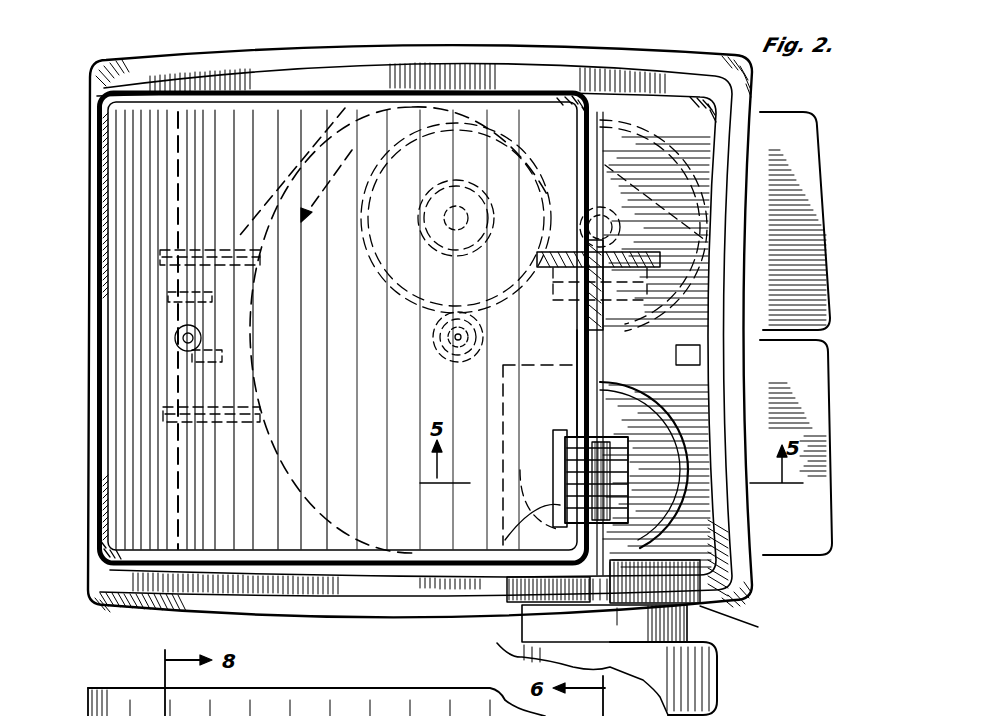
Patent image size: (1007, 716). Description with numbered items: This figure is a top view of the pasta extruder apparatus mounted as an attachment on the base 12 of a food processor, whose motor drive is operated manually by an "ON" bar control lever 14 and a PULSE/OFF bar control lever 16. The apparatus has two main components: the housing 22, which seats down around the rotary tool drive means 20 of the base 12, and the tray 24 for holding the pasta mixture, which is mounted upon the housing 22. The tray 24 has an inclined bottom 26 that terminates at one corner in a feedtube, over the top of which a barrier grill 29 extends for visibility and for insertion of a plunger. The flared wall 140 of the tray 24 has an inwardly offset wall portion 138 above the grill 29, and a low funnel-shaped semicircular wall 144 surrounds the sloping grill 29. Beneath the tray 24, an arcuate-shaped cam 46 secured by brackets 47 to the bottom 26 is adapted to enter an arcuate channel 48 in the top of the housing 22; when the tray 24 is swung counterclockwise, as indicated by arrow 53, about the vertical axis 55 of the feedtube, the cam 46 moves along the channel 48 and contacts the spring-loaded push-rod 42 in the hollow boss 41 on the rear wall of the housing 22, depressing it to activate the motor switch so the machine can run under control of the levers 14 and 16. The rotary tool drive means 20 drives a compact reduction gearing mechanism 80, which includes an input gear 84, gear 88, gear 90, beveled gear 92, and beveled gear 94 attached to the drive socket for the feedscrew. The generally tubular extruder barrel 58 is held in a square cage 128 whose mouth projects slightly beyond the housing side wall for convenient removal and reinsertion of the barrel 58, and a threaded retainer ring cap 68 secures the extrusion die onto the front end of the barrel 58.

The base 12 is at (714, 54).
The "ON" bar control lever 14 is at (812, 402).
The PULSE/OFF bar control lever 16 is at (812, 188).
The rotary tool drive means 20 is at (448, 352).
The housing 22 is at (618, 88).
The tray 24 is at (524, 84).
The inclined bottom 26 is at (378, 396).
The barrier grill 29 is at (583, 457).
The hollow boss 41 is at (176, 336).
The push-rod 42 is at (192, 356).
The arcuate-shaped cam 46 is at (168, 294).
The brackets 47 is at (160, 255).
The arcuate channel 48 is at (265, 178).
The arrow 53 is at (368, 222).
The vertical axis 55 is at (600, 478).
The extruder barrel 58 is at (687, 627).
The threaded retainer ring cap 68 is at (717, 687).
The reduction gearing mechanism 80 is at (368, 290).
The input gear 84 is at (436, 337).
The gear 88 is at (420, 190).
The gear 90 is at (512, 180).
The beveled gear 92 is at (660, 262).
The beveled gear 94 is at (688, 285).
The cage 128 is at (737, 598).
The inwardly offset wall portion 138 is at (557, 497).
The wall 140 is at (322, 90).
The funnel-shaped semicircular wall 144 is at (687, 357).